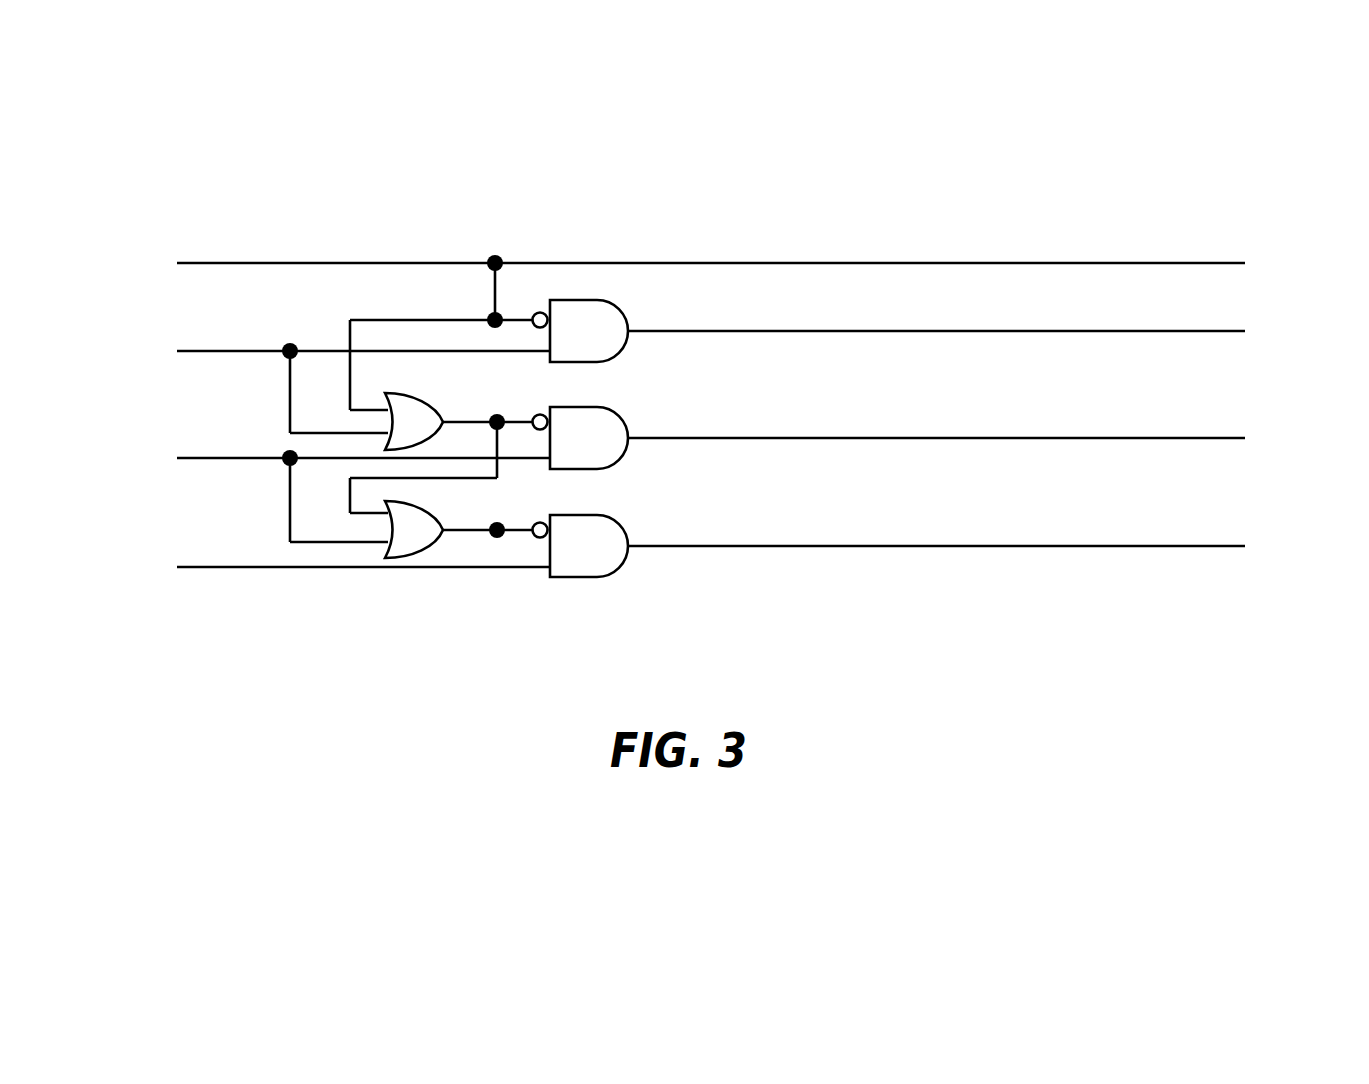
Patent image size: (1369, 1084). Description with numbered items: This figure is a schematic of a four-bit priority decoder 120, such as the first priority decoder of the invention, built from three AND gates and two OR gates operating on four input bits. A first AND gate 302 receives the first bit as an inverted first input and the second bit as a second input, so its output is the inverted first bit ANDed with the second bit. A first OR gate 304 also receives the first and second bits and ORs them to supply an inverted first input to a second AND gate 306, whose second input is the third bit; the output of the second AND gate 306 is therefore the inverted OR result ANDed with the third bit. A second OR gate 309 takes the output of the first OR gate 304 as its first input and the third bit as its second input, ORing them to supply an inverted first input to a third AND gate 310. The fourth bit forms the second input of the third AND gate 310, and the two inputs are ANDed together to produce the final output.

The priority decoder 120 is at (811, 712).
The first AND gate 302 is at (622, 308).
The first OR gate 304 is at (428, 400).
The second AND gate 306 is at (622, 414).
The second OR gate 309 is at (432, 513).
The third AND gate 310 is at (622, 523).